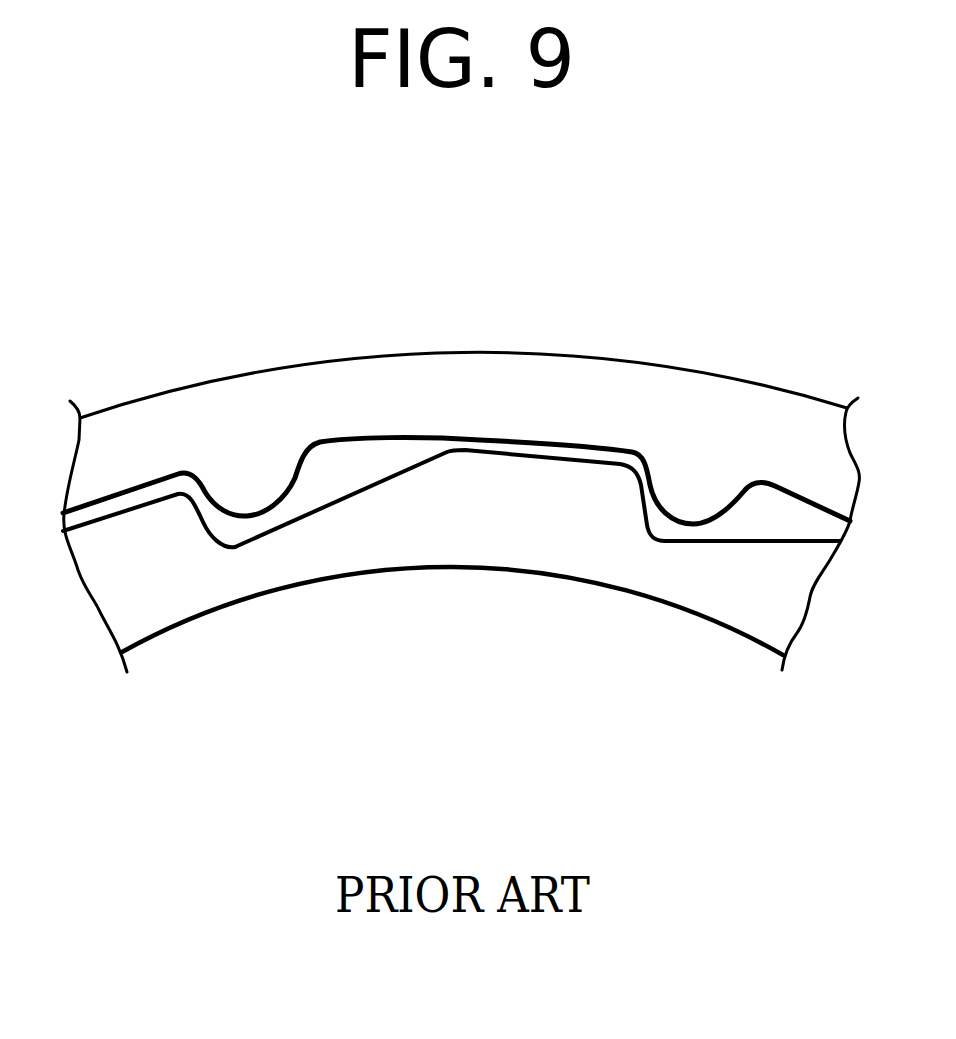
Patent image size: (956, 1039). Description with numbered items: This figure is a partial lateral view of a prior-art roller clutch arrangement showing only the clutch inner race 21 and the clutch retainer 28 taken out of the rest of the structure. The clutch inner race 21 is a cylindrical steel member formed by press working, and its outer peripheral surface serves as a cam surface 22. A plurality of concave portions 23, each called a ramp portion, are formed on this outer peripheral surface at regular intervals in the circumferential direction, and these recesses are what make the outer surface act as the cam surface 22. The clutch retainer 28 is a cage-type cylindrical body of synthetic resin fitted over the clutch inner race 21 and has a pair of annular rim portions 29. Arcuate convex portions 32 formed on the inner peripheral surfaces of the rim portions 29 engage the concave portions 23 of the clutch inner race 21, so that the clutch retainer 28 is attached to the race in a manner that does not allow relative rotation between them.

The clutch inner race 21 is at (478, 528).
The cam surface 22 is at (381, 468).
The concave portion 23 is at (232, 544).
The clutch retainer 28 is at (435, 371).
The rim portion 29 is at (564, 398).
The arcuate convex portion 32 is at (223, 482).